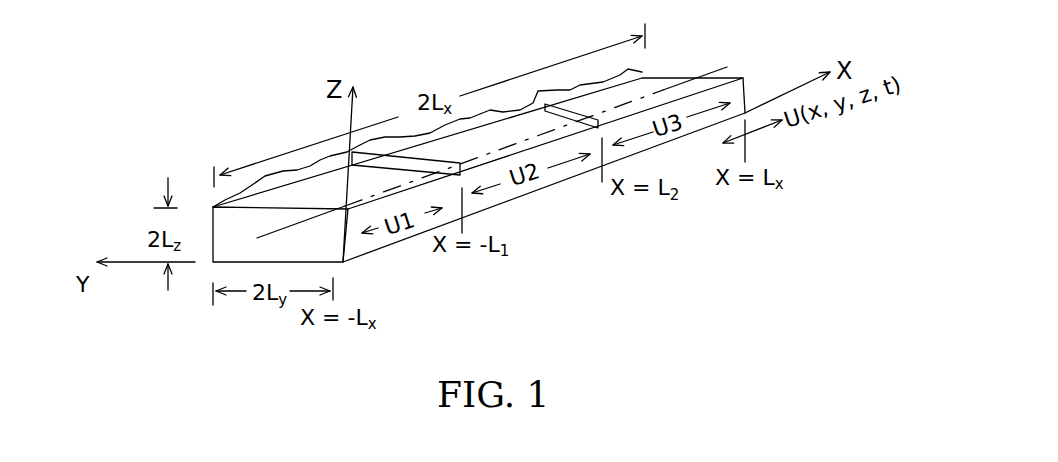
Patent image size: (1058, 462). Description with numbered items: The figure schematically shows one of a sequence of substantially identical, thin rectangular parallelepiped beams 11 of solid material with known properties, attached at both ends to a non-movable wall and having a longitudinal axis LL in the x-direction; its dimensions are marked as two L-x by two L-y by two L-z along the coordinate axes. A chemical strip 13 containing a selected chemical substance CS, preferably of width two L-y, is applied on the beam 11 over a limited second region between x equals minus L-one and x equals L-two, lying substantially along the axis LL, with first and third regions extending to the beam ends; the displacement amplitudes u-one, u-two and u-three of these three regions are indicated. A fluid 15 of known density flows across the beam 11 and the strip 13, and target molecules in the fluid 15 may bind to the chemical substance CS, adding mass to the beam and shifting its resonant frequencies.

The beam 11 is at (560, 162).
The chemical strip 13 is at (472, 143).
The fluid 15 is at (497, 263).